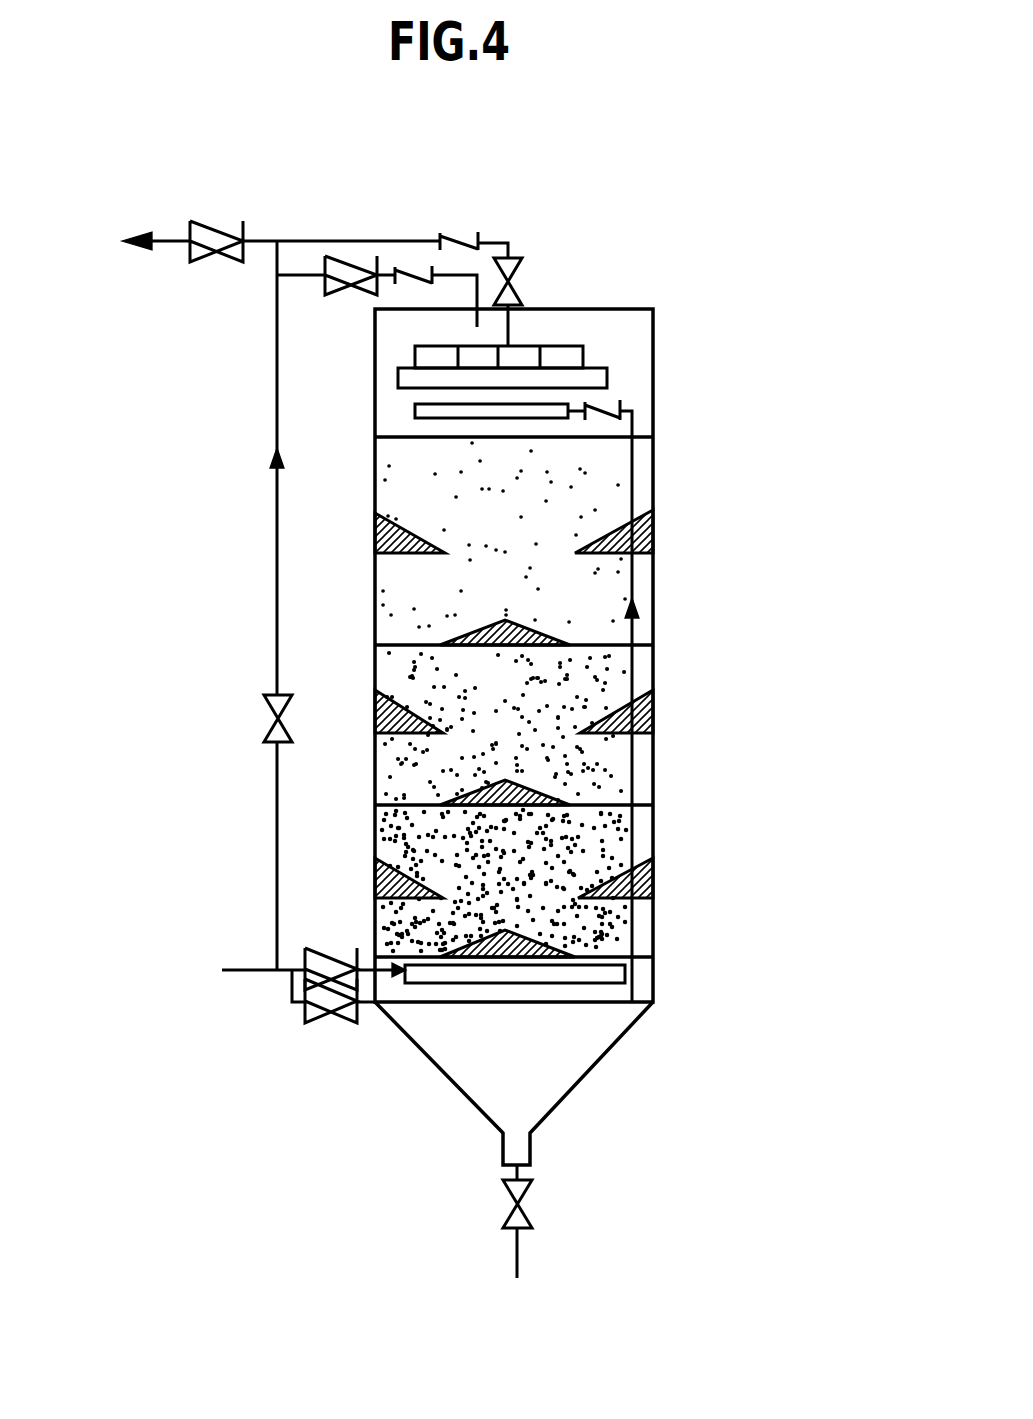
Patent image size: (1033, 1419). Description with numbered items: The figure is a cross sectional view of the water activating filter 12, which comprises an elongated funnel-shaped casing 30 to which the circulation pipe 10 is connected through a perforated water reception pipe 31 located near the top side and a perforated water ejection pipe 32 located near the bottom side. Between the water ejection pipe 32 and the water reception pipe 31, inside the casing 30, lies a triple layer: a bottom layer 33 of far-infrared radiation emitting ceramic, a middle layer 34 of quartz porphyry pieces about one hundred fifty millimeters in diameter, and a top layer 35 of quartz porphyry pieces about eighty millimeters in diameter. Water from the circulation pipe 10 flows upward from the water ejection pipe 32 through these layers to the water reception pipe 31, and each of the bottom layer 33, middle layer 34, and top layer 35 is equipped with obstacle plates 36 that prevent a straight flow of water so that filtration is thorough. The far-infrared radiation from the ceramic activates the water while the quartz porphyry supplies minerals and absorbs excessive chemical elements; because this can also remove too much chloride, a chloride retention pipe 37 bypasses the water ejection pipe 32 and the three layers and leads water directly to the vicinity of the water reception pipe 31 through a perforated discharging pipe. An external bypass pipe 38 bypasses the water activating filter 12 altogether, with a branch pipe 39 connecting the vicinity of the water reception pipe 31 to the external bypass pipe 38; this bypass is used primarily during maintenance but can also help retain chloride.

The circulation pipe 10 is at (372, 240).
The water activating filter 12 is at (547, 196).
The elongated funnel-shaped casing 30 is at (656, 486).
The perforated water reception pipe 31 is at (538, 384).
The perforated water ejection pipe 32 is at (477, 979).
The bottom layer 33 is at (618, 830).
The middle layer 34 is at (610, 765).
The top layer 35 is at (612, 575).
The obstacle plates 36 is at (578, 547).
The chloride retention pipe 37 is at (548, 406).
The external bypass pipe 38 is at (277, 418).
The branch pipe 39 is at (300, 277).